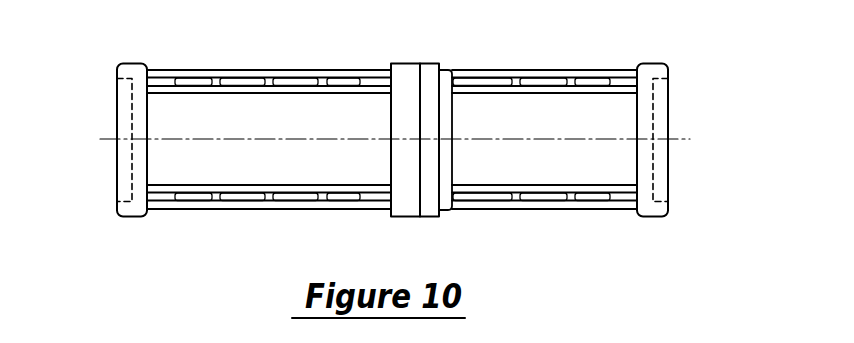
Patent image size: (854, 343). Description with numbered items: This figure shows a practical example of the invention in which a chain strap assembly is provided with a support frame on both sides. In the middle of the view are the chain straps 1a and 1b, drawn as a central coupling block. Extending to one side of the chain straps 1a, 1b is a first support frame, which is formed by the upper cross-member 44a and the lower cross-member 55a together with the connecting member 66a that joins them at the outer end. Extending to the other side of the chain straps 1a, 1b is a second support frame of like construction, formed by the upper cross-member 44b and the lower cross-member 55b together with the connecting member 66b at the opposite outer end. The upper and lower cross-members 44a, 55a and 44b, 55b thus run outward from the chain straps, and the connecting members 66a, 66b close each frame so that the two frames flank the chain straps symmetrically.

The chain strap 1a is at (402, 217).
The chain strap 1b is at (428, 217).
The upper cross-member 44a is at (243, 70).
The upper cross-member 44b is at (539, 70).
The lower cross-member 55a is at (243, 210).
The lower cross-member 55b is at (578, 210).
The connecting member 66a is at (117, 112).
The connecting member 66b is at (668, 115).